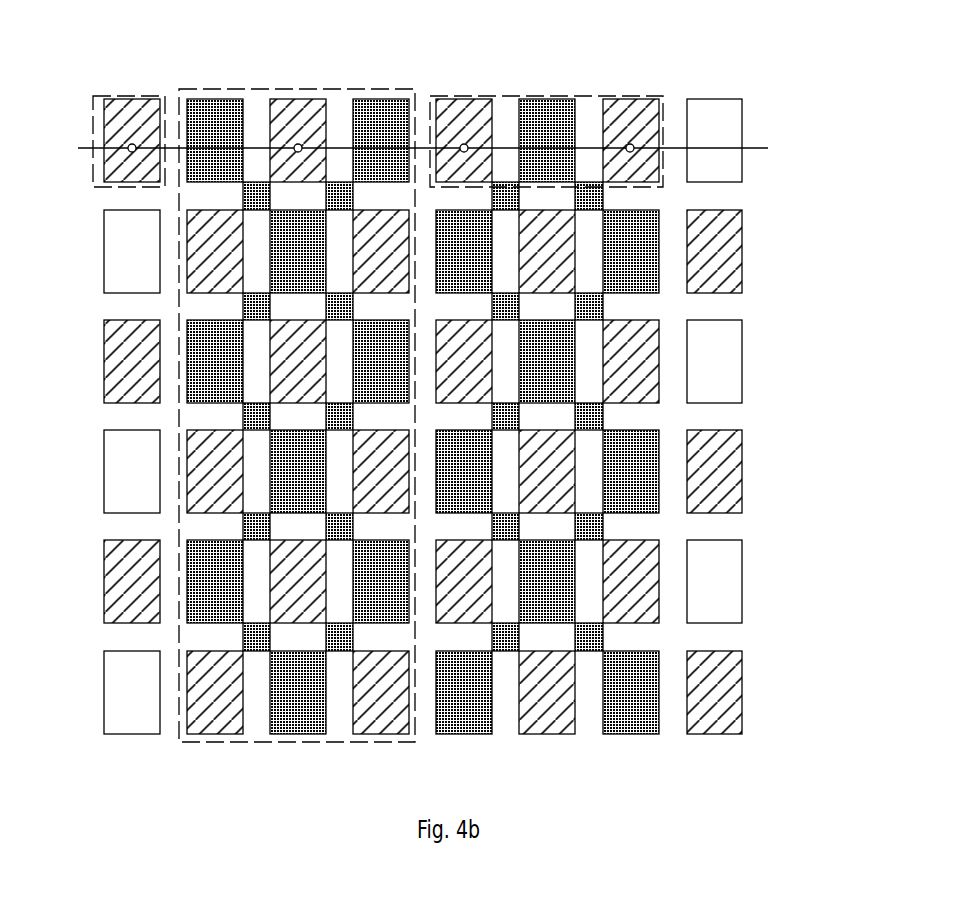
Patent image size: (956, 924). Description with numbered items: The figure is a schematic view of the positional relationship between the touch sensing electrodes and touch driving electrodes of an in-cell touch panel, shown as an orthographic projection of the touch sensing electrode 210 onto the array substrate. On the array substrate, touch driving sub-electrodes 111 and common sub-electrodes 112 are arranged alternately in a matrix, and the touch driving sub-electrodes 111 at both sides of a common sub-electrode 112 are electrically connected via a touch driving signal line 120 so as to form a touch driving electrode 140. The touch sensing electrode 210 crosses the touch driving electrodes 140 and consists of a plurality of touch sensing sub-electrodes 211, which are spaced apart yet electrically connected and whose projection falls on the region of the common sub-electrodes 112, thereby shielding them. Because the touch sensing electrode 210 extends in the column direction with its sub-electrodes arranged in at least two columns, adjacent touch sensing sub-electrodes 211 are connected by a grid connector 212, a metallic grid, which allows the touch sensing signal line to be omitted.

The touch driving electrode 140 is at (105, 97).
The touch sensing sub-electrode 211 is at (212, 98).
The grid connector 212 is at (335, 183).
The touch sensing electrode 210 is at (415, 88).
The touch driving sub-electrode 111 is at (630, 96).
The common sub-electrode 112 is at (710, 98).
The touch driving signal line 120 is at (755, 148).